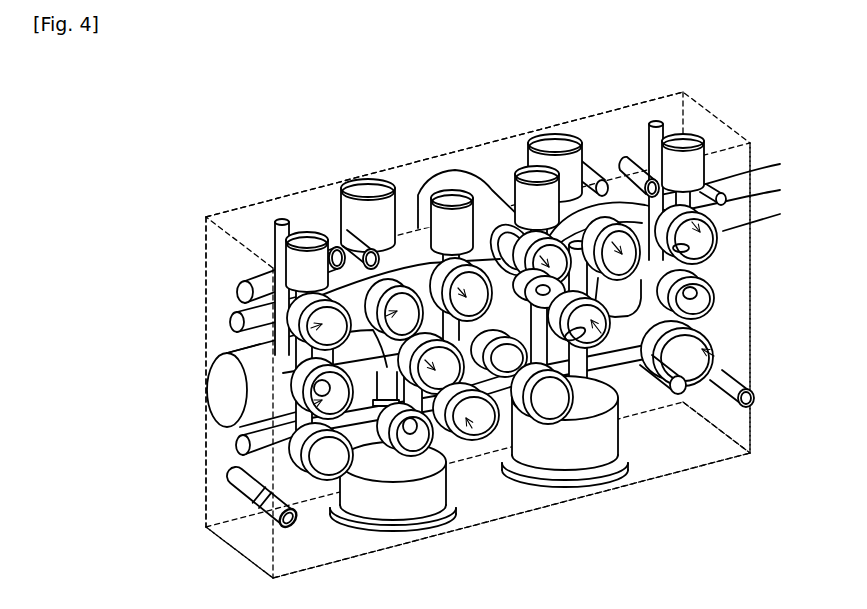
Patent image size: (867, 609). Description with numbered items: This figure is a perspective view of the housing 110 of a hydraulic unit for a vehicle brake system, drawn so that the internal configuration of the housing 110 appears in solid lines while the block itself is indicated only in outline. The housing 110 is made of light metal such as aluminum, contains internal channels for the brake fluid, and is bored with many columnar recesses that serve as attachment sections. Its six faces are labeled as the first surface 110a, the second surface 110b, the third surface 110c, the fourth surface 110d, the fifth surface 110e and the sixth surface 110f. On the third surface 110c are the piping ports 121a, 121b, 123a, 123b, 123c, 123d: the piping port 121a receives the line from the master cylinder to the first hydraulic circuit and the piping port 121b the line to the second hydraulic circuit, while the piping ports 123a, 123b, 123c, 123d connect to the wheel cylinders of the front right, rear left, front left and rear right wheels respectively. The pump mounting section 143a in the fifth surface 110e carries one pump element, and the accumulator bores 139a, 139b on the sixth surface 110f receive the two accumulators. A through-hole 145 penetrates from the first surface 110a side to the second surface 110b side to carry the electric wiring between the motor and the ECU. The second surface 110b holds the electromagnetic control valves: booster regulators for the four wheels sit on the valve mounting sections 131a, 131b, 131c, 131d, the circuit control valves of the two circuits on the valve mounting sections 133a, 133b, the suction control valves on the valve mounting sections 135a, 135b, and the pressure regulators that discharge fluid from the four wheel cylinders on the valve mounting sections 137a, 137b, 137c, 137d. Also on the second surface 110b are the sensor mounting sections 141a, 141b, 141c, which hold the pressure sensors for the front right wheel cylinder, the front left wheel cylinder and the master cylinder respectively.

The housing 110 is at (738, 226).
The first surface 110a is at (201, 224).
The second surface 110b is at (741, 245).
The third surface 110c is at (404, 182).
The fourth surface 110d is at (759, 268).
The fifth surface 110e is at (215, 496).
The sixth surface 110f is at (446, 538).
The piping port 121a is at (357, 190).
The piping port 121b is at (554, 146).
The piping port 123a is at (310, 239).
The piping port 123b is at (451, 193).
The piping port 123c is at (682, 138).
The piping port 123d is at (525, 178).
The valve mounting section 131a is at (228, 351).
The valve mounting section 131b is at (238, 289).
The valve mounting section 131c is at (717, 212).
The valve mounting section 131d is at (713, 187).
The valve mounting section 133a is at (231, 321).
The valve mounting section 133b is at (713, 203).
The valve mounting section 135a is at (213, 365).
The valve mounting section 135b is at (600, 330).
The valve mounting section 137a is at (322, 462).
The valve mounting section 137b is at (497, 385).
The valve mounting section 137c is at (700, 348).
The valve mounting section 137d is at (551, 402).
The accumulator bore 139a is at (357, 500).
The accumulator bore 139b is at (590, 447).
The sensor mounting section 141a is at (300, 432).
The sensor mounting section 141b is at (700, 294).
The sensor mounting section 141c is at (404, 442).
The pump mounting section 143a is at (226, 389).
The through-hole 145 is at (488, 222).